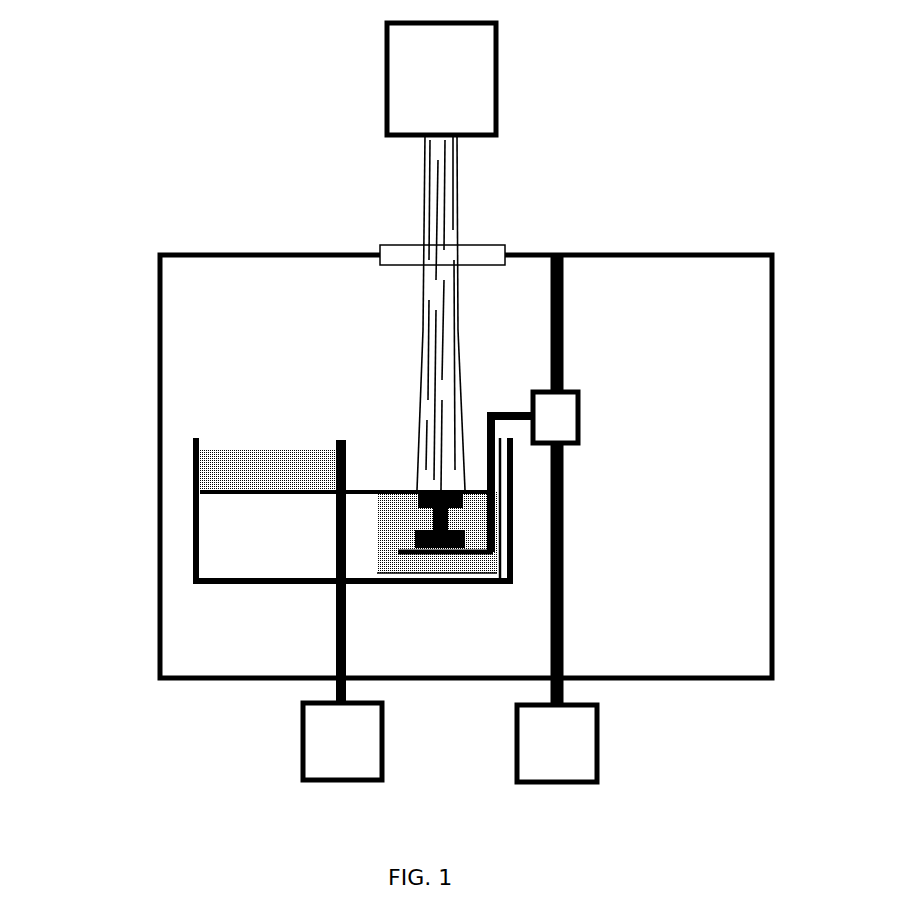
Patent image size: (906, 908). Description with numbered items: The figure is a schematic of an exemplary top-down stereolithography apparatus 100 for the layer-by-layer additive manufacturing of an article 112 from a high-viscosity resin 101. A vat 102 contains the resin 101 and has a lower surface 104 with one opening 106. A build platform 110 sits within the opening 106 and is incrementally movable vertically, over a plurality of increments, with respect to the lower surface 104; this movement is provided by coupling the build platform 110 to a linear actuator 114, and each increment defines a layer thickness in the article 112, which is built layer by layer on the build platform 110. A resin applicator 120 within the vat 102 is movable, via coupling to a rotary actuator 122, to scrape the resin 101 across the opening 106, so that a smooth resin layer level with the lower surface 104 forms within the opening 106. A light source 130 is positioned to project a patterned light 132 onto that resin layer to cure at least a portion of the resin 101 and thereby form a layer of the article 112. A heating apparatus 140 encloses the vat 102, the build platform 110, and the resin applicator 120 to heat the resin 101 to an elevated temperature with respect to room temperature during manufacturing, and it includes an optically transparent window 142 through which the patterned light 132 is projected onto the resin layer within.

The apparatus 100 is at (409, 408).
The high-viscosity resin 101 is at (235, 465).
The vat 102 is at (193, 515).
The lower surface 104 is at (267, 480).
The opening 106 is at (396, 470).
The build platform 110 is at (482, 557).
The article 112 is at (410, 557).
The linear actuator 114 is at (575, 748).
The resin applicator 120 is at (340, 443).
The rotary actuator 122 is at (327, 752).
The light source 130 is at (496, 90).
The patterned light 132 is at (447, 217).
The heating apparatus 140 is at (690, 255).
The optically transparent window 142 is at (392, 253).